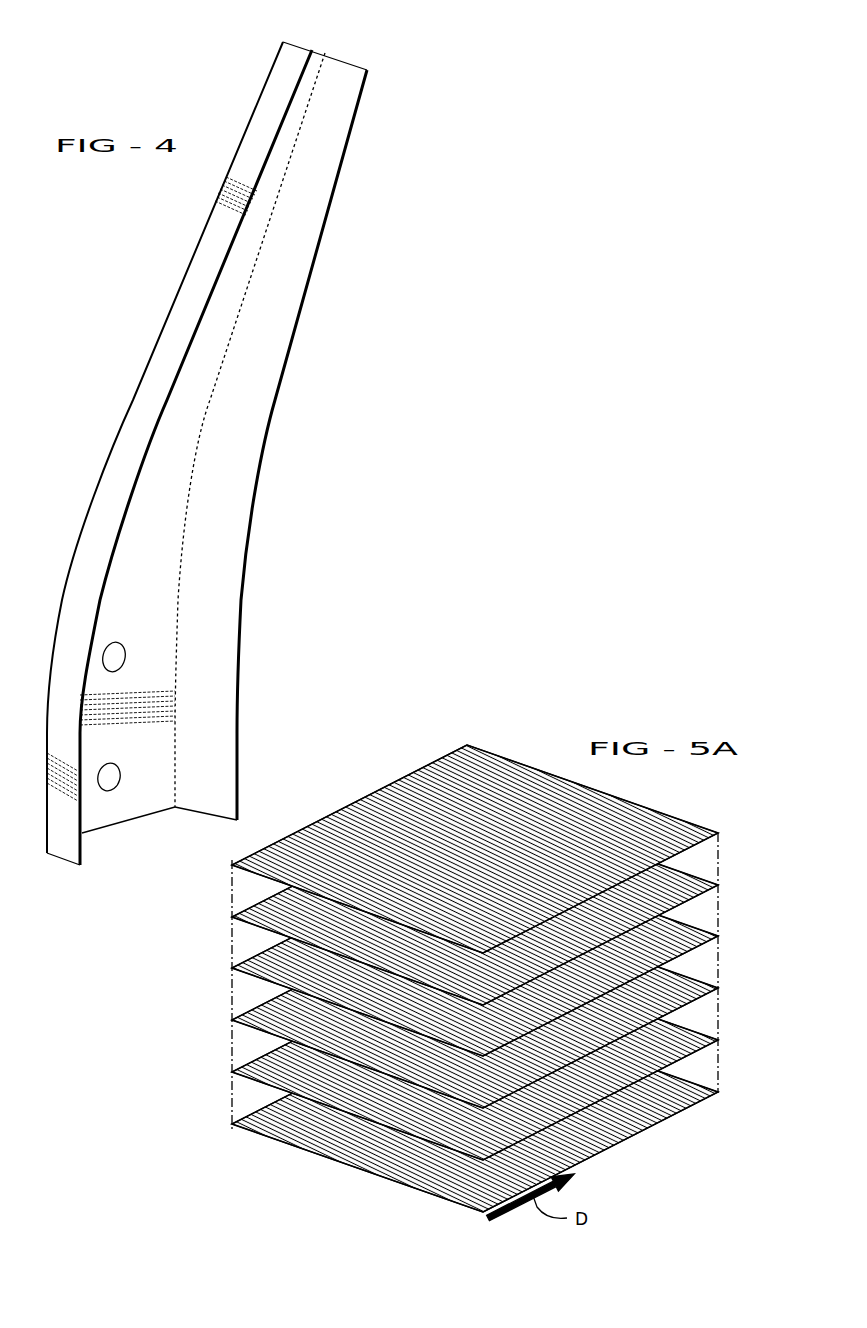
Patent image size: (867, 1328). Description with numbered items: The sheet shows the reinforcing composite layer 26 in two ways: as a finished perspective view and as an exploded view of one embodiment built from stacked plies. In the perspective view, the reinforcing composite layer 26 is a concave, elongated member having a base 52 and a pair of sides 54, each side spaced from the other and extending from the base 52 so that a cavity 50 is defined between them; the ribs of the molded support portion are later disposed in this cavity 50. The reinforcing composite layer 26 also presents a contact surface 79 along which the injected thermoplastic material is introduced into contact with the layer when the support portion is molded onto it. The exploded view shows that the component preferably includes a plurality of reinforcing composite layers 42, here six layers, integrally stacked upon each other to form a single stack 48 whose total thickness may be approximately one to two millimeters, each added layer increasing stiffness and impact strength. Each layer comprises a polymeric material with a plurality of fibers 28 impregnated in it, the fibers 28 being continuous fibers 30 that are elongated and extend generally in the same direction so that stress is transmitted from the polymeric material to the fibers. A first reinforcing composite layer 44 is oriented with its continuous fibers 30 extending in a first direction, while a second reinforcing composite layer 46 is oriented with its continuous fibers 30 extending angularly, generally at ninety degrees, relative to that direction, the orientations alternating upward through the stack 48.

In FIG. 4, the reinforcing composite layer 26 is at (123, 460).
In FIG. 5A, the reinforcing composite layer 26 is at (240, 889).
In FIG. 4, the contact surface 79 is at (190, 372).
In FIG. 4, the cavity 50 is at (150, 570).
In FIG. 4, the pair of sides 54 is at (218, 783).
In FIG. 4, the base 52 is at (118, 808).
In FIG. 5A, the plurality of fibers 28 is at (426, 996).
In FIG. 5A, the continuous fibers 30 is at (247, 1072).
In FIG. 5A, the plurality of reinforcing composite layers 42 is at (449, 996).
In FIG. 5A, the single stack 48 is at (710, 808).
In FIG. 5A, the first reinforcing composite layer 44 is at (450, 1203).
In FIG. 5A, the second reinforcing composite layer 46 is at (378, 1102).